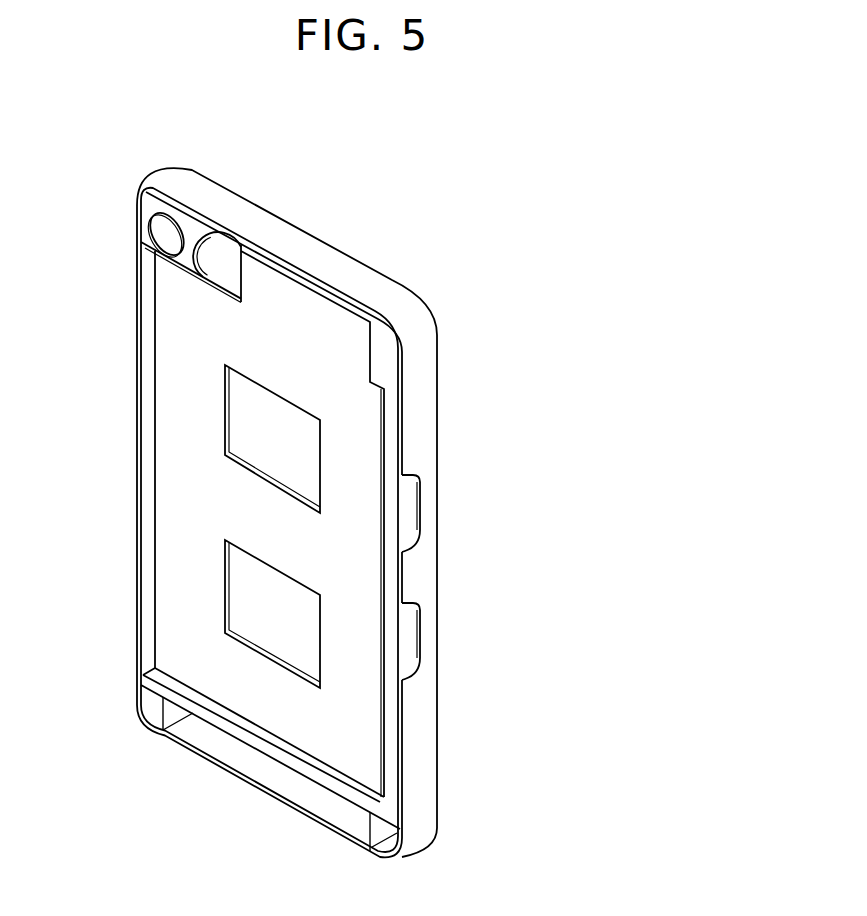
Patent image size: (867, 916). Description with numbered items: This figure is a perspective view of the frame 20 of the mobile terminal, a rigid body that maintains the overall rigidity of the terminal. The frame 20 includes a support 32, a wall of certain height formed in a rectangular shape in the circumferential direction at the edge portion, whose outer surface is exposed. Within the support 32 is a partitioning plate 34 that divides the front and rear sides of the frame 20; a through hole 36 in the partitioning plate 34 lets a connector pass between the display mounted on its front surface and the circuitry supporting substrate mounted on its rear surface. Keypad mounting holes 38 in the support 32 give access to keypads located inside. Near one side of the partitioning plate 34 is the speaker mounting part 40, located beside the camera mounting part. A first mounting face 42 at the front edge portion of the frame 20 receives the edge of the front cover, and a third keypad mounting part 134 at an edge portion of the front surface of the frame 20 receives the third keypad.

The frame 20 is at (458, 454).
The support 32 is at (428, 725).
The partitioning plate 34 is at (172, 554).
The through hole 36 is at (257, 422).
The keypad mounting holes 38 is at (408, 643).
The speaker mounting part 40 is at (218, 258).
The first mounting face 42 is at (271, 250).
The third keypad mounting part 134 is at (252, 765).